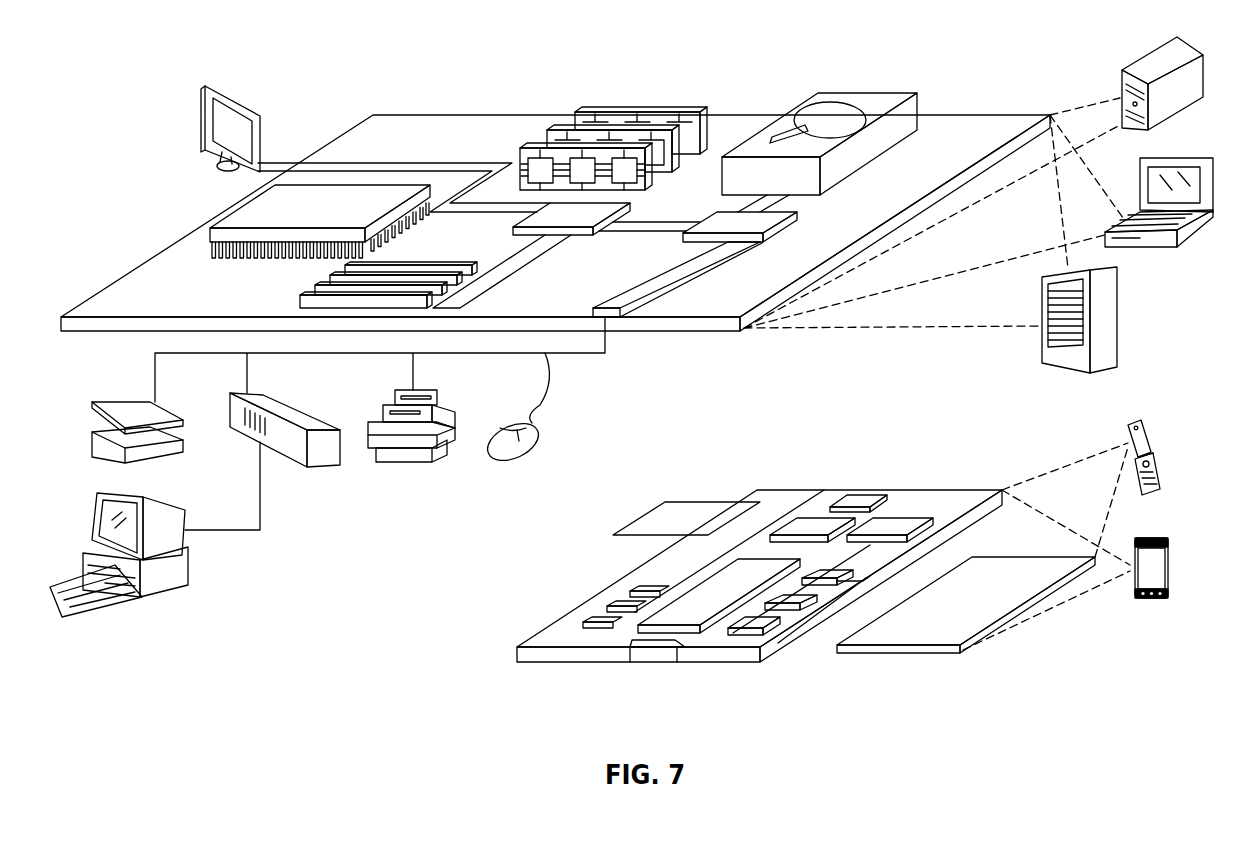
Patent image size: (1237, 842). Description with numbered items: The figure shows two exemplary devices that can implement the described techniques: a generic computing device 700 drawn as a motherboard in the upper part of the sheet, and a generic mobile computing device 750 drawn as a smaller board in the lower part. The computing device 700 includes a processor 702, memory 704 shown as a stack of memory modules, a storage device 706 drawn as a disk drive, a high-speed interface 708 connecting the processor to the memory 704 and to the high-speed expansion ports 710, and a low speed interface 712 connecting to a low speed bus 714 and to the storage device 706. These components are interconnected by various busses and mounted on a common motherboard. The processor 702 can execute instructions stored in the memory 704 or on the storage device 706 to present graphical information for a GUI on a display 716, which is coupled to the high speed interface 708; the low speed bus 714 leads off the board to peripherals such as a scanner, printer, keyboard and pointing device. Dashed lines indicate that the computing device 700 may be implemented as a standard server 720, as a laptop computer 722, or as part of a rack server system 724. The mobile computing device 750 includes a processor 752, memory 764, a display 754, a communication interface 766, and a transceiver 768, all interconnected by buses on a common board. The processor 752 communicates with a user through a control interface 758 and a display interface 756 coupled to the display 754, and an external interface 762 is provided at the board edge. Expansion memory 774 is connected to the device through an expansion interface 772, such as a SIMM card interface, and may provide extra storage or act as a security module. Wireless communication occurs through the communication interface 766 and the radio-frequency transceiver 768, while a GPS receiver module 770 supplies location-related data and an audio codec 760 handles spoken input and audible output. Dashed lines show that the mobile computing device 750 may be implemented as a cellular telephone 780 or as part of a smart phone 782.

The computing device 700 is at (328, 62).
The processor 702 is at (228, 211).
The memory 704 is at (643, 109).
The storage device 706 is at (860, 94).
The high-speed interface 708 is at (583, 214).
The high-speed expansion ports 710 is at (322, 279).
The low speed interface 712 is at (713, 218).
The low speed bus 714 is at (612, 304).
The display 716 is at (211, 84).
The standard server 720 is at (1140, 68).
The laptop computer 722 is at (1190, 160).
The rack server system 724 is at (1117, 320).
The mobile computing device 750 is at (476, 672).
The processor 752 is at (691, 601).
The display 754 is at (1004, 575).
The display interface 756 is at (762, 624).
The control interface 758 is at (797, 598).
The audio codec 760 is at (834, 569).
The external interface 762 is at (653, 648).
The memory 764 is at (612, 608).
The communication interface 766 is at (812, 521).
The transceiver 768 is at (896, 521).
The GPS receiver module 770 is at (858, 501).
The expansion interface 772 is at (745, 500).
The expansion memory 774 is at (665, 500).
The cellular telephone 780 is at (1135, 420).
The smart phone 782 is at (1145, 538).